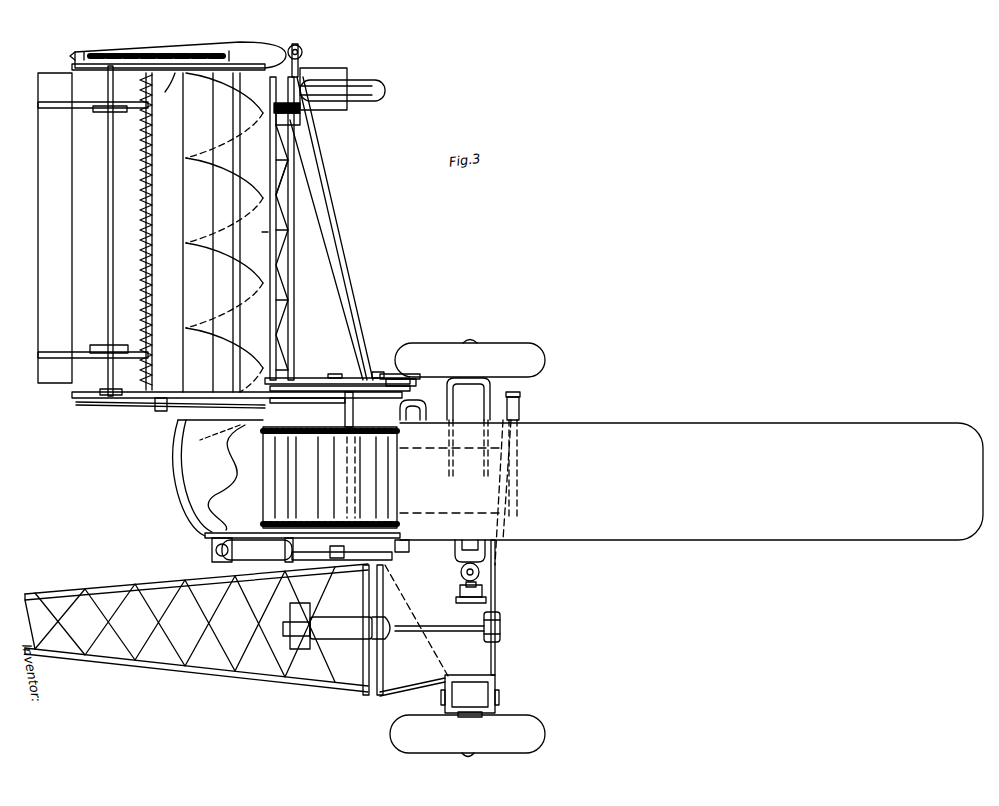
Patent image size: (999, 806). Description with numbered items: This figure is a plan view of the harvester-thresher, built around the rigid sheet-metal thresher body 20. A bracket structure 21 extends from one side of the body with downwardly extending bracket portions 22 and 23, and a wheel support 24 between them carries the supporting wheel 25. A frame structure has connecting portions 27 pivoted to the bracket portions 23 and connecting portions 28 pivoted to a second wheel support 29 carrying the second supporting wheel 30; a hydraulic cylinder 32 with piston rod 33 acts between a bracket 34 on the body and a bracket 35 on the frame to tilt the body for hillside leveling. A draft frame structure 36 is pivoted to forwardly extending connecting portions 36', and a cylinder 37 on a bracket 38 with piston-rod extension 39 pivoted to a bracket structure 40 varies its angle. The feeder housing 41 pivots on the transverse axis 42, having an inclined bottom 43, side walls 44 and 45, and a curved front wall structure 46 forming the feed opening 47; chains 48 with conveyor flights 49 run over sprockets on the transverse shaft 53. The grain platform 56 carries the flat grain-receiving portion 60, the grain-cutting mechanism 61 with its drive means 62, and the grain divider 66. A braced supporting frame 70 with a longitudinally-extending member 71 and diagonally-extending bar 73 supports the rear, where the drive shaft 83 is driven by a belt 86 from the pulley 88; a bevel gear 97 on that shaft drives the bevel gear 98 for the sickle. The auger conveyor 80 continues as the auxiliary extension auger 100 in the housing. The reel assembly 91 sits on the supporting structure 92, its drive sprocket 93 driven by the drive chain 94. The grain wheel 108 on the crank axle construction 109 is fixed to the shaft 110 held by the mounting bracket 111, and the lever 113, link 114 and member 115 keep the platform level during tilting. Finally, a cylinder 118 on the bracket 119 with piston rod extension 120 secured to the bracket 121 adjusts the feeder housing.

The thresher body 20 is at (580, 425).
The bracket structure 21 is at (516, 492).
The bracket portion 22 is at (520, 402).
The bracket portion 23 is at (353, 410).
The wheel support 24 is at (492, 392).
The supporting wheel 25 is at (540, 360).
The connecting portions 27 is at (520, 394).
The connecting portions 28 is at (492, 690).
The second wheel support 29 is at (482, 715).
The second supporting wheel 30 is at (532, 733).
The cylinder 32 is at (480, 572).
The piston rod 33 is at (482, 588).
The bracket 34 is at (485, 553).
The bracket 35 is at (486, 600).
The draft frame structure 36 is at (204, 627).
The connecting portions 36' is at (414, 630).
The cylinder 37 is at (338, 622).
The bracket 38 is at (290, 628).
The piston-rod extension 39 is at (458, 626).
The bracket structure 40 is at (500, 622).
The feeder housing 41 is at (180, 465).
The transverse axis 42 is at (396, 556).
The bottom 43 is at (280, 488).
The side wall 44 is at (342, 546).
The side wall 45 is at (320, 403).
The front wall structure 46 is at (180, 448).
The feed opening 47 is at (157, 412).
The chains 48 is at (304, 476).
The conveyor flights 49 is at (318, 480).
The transverse shaft 53 is at (380, 480).
The grain platform 56 is at (263, 232).
The grain-receiving portion 60 is at (165, 244).
The grain-cutting mechanism 61 is at (145, 216).
The drive means 62 is at (282, 62).
The grain divider 66 is at (80, 404).
The braced supporting frame 70 is at (330, 258).
The longitudinally-extending member 71 is at (336, 376).
The diagonally-extending bar 73 is at (346, 290).
The auger conveyor 80 is at (215, 205).
The drive shaft 83 is at (295, 165).
The belt 86 is at (378, 373).
The pulley 88 is at (410, 375).
The reel assembly 91 is at (38, 247).
The supporting structure 92 is at (80, 66).
The drive sprocket 93 is at (75, 53).
The drive chain 94 is at (166, 87).
The bevel gear 97 is at (303, 56).
The bevel gear 98 is at (292, 113).
The auxiliary extension auger 100 is at (200, 483).
The grain wheel 108 is at (380, 87).
The crank axle construction 109 is at (345, 76).
The shaft 110 is at (283, 190).
The mounting bracket 111 is at (285, 120).
The lever 113 is at (282, 403).
The link 114 is at (300, 382).
The member 115 is at (414, 400).
The cylinder 118 is at (226, 558).
The bracket 119 is at (212, 545).
The piston rod extension 120 is at (305, 560).
The bracket 121 is at (344, 556).